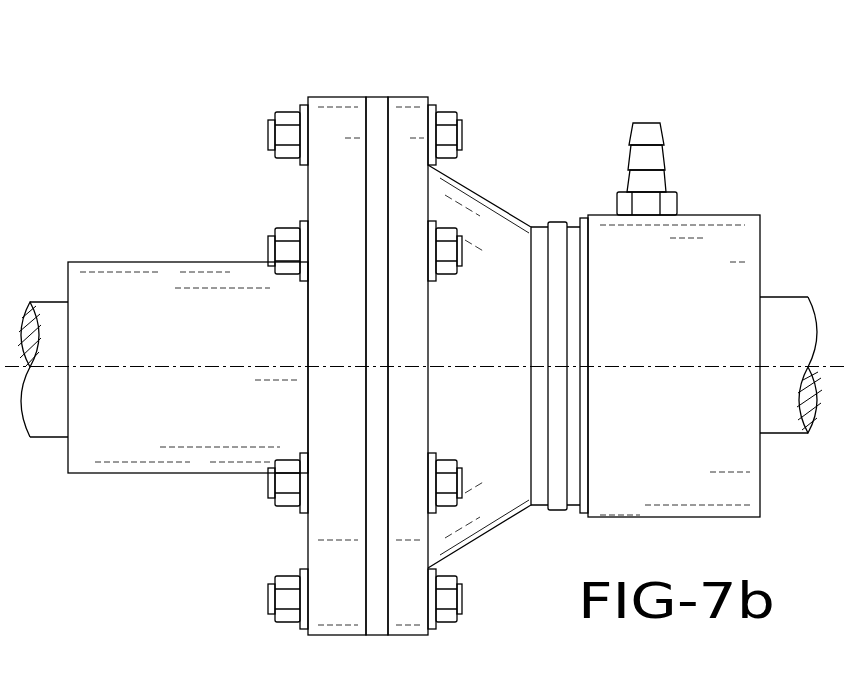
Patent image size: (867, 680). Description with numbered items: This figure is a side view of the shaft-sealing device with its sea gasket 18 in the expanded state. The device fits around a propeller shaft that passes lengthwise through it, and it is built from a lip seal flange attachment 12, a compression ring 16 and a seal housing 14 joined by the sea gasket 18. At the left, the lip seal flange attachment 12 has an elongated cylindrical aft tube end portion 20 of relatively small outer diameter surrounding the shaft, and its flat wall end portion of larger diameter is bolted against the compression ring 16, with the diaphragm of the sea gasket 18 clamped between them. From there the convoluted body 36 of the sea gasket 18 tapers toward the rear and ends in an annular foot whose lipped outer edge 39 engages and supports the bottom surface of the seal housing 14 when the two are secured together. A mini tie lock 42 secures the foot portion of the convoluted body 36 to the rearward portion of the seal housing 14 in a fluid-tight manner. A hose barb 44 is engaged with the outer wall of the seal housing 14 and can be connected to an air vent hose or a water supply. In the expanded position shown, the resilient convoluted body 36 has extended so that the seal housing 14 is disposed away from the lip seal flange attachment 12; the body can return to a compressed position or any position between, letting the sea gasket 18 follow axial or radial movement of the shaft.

The lip seal flange attachment 12 is at (330, 95).
The seal housing 14 is at (763, 214).
The compression ring 16 is at (414, 95).
The sea gasket 18 is at (376, 95).
The aft tube end portion 20 is at (128, 262).
The convoluted body 36 is at (492, 190).
The lipped outer edge 39 is at (583, 513).
The mini tie lock 42 is at (558, 232).
The hose barb 44 is at (652, 157).